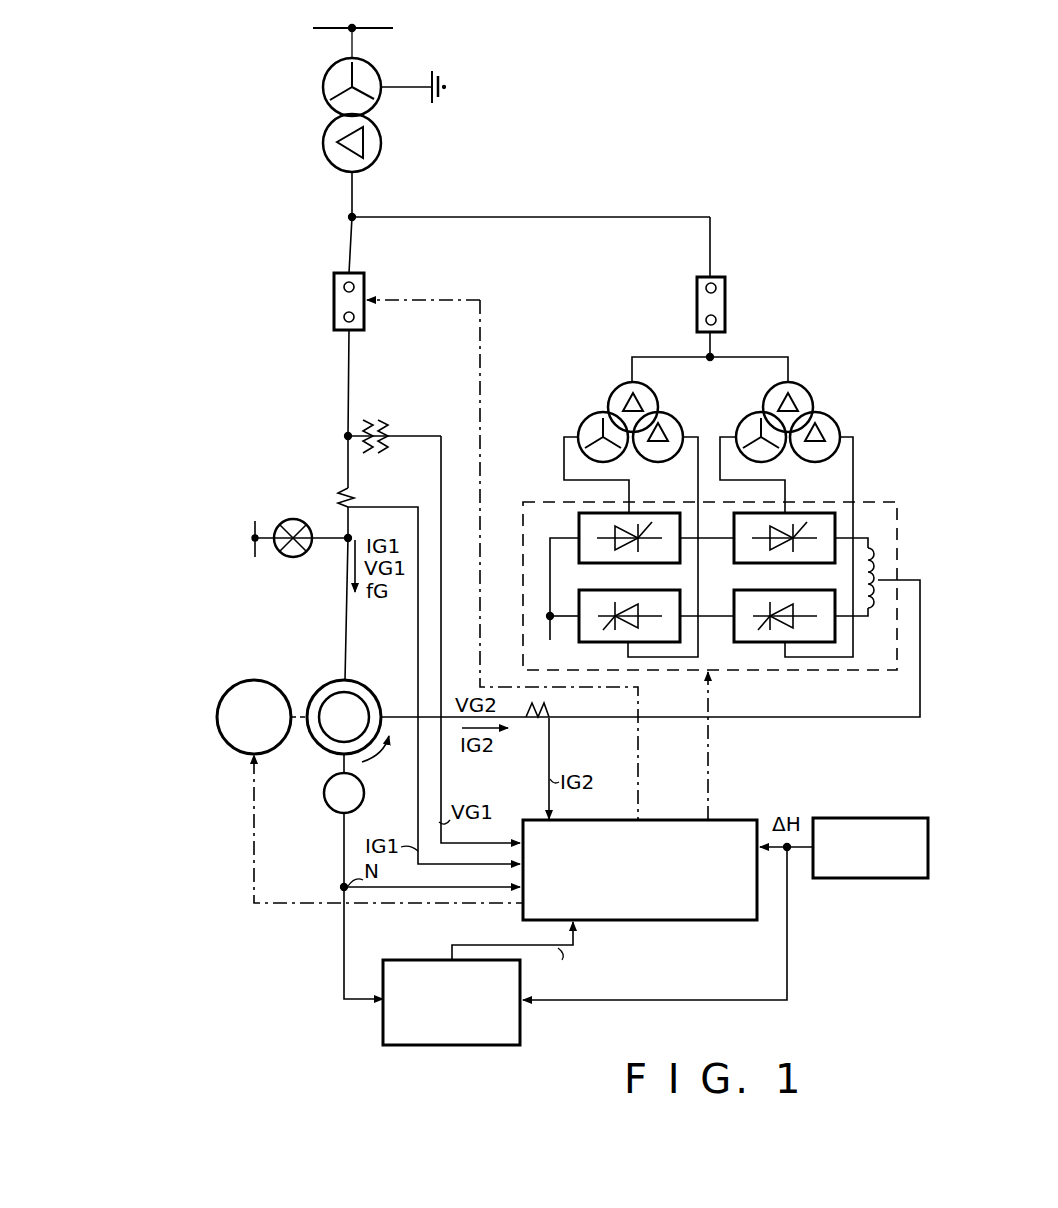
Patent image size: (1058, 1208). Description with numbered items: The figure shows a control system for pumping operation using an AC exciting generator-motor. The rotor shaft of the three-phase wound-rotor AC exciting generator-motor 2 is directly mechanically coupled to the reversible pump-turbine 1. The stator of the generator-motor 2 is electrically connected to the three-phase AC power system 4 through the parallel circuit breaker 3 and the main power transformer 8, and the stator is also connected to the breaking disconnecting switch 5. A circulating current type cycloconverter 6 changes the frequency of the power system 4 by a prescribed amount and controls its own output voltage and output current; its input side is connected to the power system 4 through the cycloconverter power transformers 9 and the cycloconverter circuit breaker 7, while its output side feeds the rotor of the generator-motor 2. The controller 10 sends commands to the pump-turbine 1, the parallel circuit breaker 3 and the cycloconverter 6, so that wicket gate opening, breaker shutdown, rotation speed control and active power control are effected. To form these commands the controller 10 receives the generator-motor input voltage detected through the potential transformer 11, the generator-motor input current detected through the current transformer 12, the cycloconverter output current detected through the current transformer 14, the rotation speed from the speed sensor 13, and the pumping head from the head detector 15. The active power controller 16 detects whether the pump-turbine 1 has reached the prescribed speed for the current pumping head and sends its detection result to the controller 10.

The reversible pump-turbine 1 is at (252, 680).
The AC exciting generator-motor 2 is at (325, 681).
The parallel circuit breaker 3 is at (364, 278).
The AC power system 4 is at (387, 30).
The breaking disconnecting switch 5 is at (296, 519).
The circulating current type cycloconverter 6 is at (876, 500).
The cycloconverter circuit breaker 7 is at (725, 282).
The main power transformer 8 is at (381, 143).
The cycloconverter power transformers 9 is at (760, 401).
The controller 10 is at (703, 922).
The potential transformer 11 is at (384, 422).
The current transformer 12 is at (352, 491).
The speed sensor 13 is at (324, 808).
The current transformer 14 is at (553, 724).
The head detector 15 is at (892, 818).
The active power controller 16 is at (522, 1032).